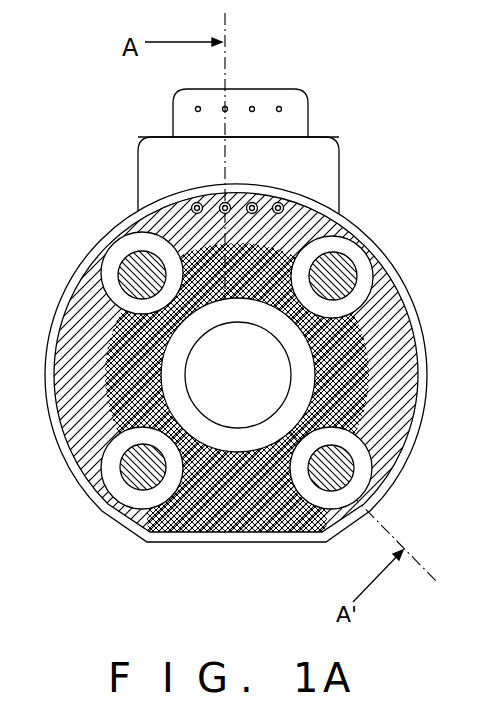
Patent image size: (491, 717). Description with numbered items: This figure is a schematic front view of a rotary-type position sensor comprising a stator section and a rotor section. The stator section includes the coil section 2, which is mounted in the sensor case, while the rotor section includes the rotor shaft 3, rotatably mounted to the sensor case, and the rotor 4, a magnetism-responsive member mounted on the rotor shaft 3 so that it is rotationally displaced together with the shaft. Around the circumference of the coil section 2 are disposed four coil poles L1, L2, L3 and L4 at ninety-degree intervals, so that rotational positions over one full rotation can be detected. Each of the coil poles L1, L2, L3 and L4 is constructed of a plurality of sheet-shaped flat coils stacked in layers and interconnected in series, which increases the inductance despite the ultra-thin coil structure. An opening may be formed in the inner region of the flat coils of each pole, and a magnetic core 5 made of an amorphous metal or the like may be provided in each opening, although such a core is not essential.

The coil section 2 is at (174, 208).
The rotor shaft 3 is at (183, 393).
The rotor 4 is at (233, 533).
The magnetic core 5 is at (128, 280).
The coil pole L1 is at (353, 252).
The coil pole L2 is at (362, 476).
The coil pole L3 is at (121, 490).
The coil pole L4 is at (119, 260).